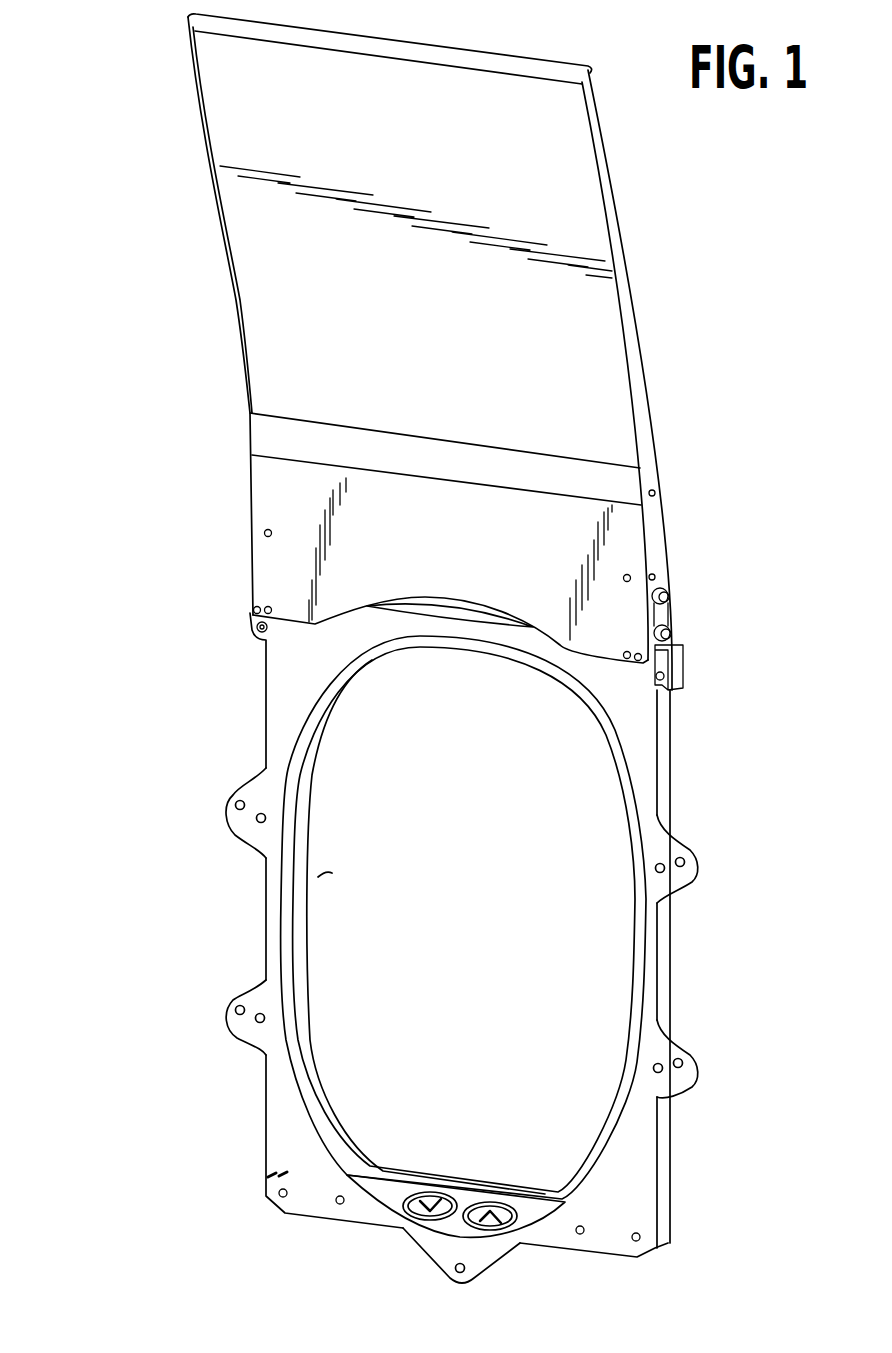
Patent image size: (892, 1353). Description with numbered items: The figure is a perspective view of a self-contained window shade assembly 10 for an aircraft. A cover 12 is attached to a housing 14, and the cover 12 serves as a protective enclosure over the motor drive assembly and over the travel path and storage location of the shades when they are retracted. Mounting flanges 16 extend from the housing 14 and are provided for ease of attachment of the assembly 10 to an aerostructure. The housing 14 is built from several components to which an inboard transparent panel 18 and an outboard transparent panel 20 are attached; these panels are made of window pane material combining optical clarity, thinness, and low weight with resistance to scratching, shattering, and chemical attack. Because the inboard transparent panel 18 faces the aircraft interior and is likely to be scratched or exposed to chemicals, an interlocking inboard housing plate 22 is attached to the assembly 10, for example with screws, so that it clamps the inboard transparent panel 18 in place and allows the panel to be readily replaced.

The window shade assembly 10 is at (132, 143).
The cover 12 is at (229, 263).
The housing 14 is at (266, 718).
The mounting flanges 16 is at (242, 788).
The inboard transparent panel 18 is at (332, 856).
The outboard transparent panel 20 is at (344, 885).
The inboard housing plate 22 is at (278, 1140).